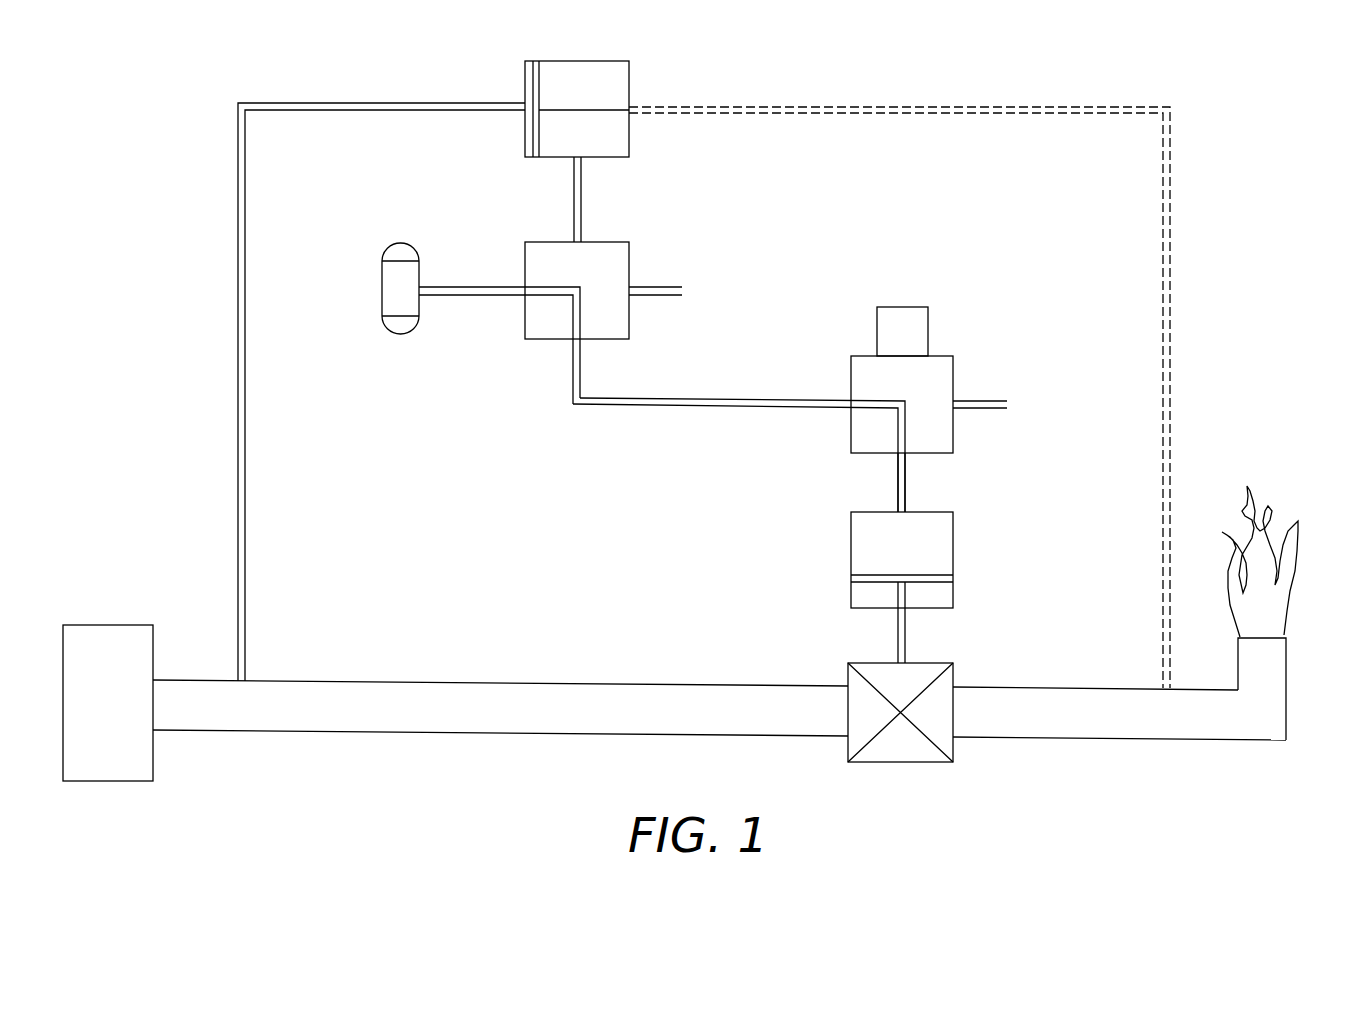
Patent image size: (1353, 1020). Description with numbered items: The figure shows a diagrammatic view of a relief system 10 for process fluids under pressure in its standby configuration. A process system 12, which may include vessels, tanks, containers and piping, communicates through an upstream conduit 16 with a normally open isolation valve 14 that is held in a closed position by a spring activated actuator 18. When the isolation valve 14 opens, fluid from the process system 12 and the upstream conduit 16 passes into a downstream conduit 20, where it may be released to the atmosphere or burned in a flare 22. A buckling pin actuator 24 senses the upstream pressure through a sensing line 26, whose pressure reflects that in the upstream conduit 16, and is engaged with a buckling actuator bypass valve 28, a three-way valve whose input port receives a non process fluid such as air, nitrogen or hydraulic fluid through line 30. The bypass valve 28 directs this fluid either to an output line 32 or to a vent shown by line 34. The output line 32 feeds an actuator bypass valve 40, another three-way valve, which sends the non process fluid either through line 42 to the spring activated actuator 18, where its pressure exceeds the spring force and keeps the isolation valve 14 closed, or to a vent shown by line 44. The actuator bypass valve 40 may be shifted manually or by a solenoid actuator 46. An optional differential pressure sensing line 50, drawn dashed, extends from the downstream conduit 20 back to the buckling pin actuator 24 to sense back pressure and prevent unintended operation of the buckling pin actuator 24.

The relief system 10 is at (160, 177).
The process system 12 is at (105, 625).
The isolation valve 14 is at (903, 762).
The upstream conduit 16 is at (422, 732).
The spring activated actuator 18 is at (953, 537).
The downstream conduit 20 is at (1093, 739).
The flare 22 is at (1257, 493).
The buckling pin actuator 24 is at (632, 80).
The sensing line 26 is at (328, 103).
The buckling actuator bypass valve 28 is at (612, 242).
The non process fluid line 30 is at (458, 287).
The output line 32 is at (570, 380).
The vent line 34 is at (672, 291).
The actuator bypass valve 40 is at (955, 360).
The line 42 is at (908, 492).
The vent line 44 is at (990, 403).
The solenoid actuator 46 is at (918, 307).
The differential pressure sensing line 50 is at (1172, 352).